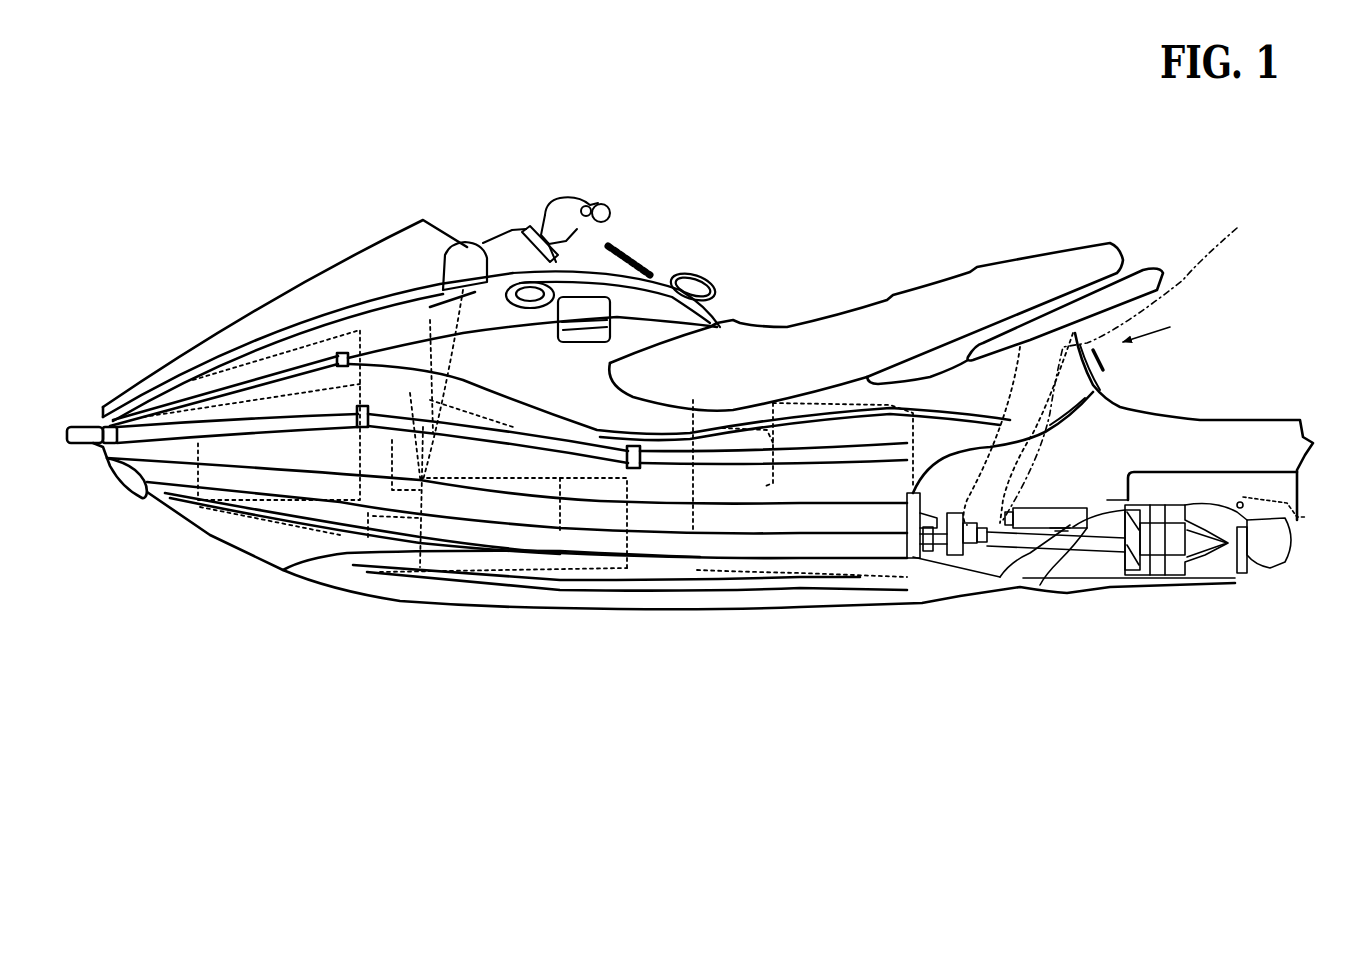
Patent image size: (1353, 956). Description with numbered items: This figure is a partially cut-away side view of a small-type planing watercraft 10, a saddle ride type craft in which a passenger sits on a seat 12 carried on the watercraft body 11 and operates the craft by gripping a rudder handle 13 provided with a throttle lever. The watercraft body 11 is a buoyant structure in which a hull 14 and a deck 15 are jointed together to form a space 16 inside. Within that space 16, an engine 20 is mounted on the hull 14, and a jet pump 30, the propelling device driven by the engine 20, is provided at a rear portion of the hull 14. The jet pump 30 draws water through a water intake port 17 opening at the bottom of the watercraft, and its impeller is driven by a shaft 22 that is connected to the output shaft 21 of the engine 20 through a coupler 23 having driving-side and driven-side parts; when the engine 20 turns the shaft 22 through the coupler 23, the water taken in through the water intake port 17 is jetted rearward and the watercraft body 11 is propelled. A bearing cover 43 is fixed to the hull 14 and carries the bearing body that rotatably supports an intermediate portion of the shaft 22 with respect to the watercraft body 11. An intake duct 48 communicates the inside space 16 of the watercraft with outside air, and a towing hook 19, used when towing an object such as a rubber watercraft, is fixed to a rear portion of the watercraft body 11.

The small-type planing watercraft 10 is at (440, 191).
The watercraft body 11 is at (1161, 315).
The seat 12 is at (762, 323).
The rudder handle 13 is at (598, 200).
The hull 14 is at (866, 609).
The deck 15 is at (1068, 383).
The space 16 is at (673, 548).
The water intake port 17 is at (1030, 593).
The towing hook 19 is at (1090, 362).
The engine 20 is at (843, 400).
The output shaft 21 is at (923, 555).
The shaft (drive shaft) 22 is at (1093, 588).
The coupler 23 is at (957, 557).
The jet pump 30 is at (1166, 600).
The bearing cover 43 is at (1050, 507).
The intake duct 48 is at (1130, 358).